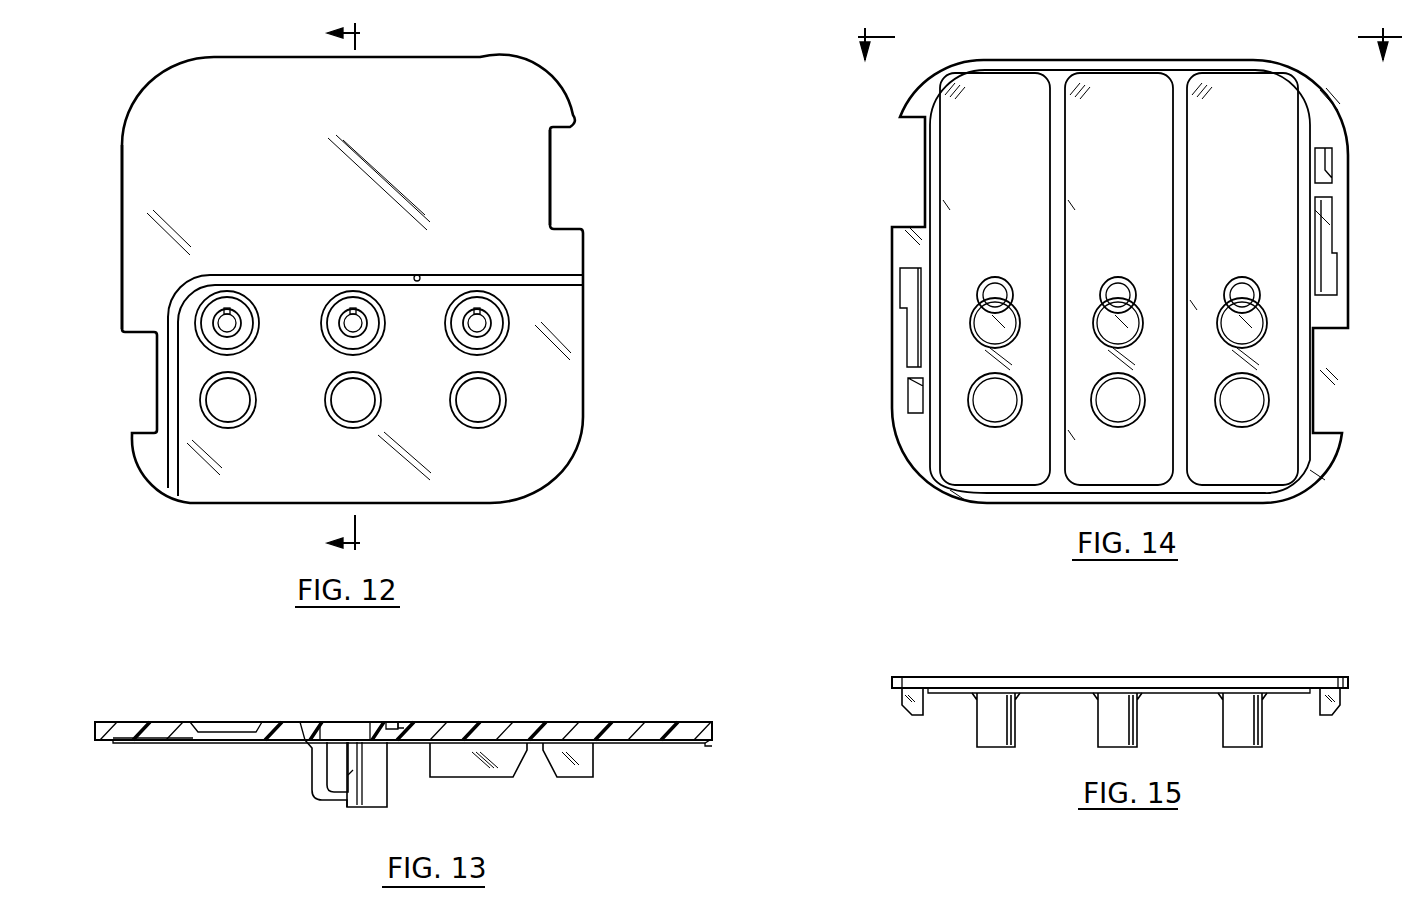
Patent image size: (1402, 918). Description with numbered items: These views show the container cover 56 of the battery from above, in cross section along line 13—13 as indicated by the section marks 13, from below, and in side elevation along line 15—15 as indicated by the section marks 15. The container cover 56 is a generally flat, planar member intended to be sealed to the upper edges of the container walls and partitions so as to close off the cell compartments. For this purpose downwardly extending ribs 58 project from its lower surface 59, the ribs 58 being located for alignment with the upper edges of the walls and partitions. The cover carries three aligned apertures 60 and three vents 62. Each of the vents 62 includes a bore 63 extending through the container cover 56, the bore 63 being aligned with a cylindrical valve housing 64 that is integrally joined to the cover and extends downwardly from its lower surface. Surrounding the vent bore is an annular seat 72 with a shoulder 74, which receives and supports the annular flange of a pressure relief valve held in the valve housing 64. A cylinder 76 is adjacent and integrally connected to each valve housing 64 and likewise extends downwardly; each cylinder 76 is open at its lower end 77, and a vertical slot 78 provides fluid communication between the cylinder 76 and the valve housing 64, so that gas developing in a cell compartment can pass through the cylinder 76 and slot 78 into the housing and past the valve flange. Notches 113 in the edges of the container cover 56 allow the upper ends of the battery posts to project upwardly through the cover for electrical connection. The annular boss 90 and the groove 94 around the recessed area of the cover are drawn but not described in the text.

In FIG. 12, the section line 13— 13 is at (339, 289).
In FIG. 14, the section line 15— 15 is at (1114, 47).
In FIG. 12, the container cover 56 is at (585, 391).
In FIG. 13, the container cover 56 is at (585, 722).
In FIG. 14, the container cover 56 is at (1223, 60).
In FIG. 15, the container cover 56 is at (1157, 677).
In FIG. 13, the ribs 58 is at (702, 745).
In FIG. 14, the ribs 58 is at (1298, 122).
In FIG. 15, the ribs 58 is at (948, 695).
In FIG. 13, the lower surface 59 is at (653, 743).
In FIG. 14, the lower surface 59 is at (1134, 120).
In FIG. 15, the lower surface 59 is at (1187, 690).
In FIG. 12, the apertures 60 is at (470, 420).
In FIG. 13, the apertures 60 is at (213, 722).
In FIG. 14, the apertures 60 is at (1244, 418).
In FIG. 12, the vents 62 is at (497, 320).
In FIG. 13, the vents 62 is at (338, 735).
In FIG. 13, the bore 63 is at (313, 732).
In FIG. 13, the cylindrical valve housing 64 is at (315, 757).
In FIG. 14, the cylindrical valve housing 64 is at (1265, 330).
In FIG. 15, the cylindrical valve housing 64 is at (1222, 737).
In FIG. 12, the annular seat 72 is at (493, 347).
In FIG. 13, the annular seat 72 is at (302, 728).
In FIG. 13, the shoulder 74 is at (365, 728).
In FIG. 13, the cylinder 76 is at (392, 797).
In FIG. 14, the cylinder 76 is at (1260, 293).
In FIG. 13, the lower end 77 is at (373, 802).
In FIG. 14, the lower end 77 is at (1240, 288).
In FIG. 12, the vertical slot 78 is at (473, 312).
In FIG. 13, the vertical slot 78 is at (348, 775).
In FIG. 12, the annular boss 90 is at (488, 418).
In FIG. 13, the annular boss 90 is at (200, 742).
In FIG. 12, the groove 94 is at (418, 276).
In FIG. 13, the groove 94 is at (397, 718).
In FIG. 12, the notches 113 is at (550, 177).
In FIG. 14, the notches 113 is at (1330, 433).